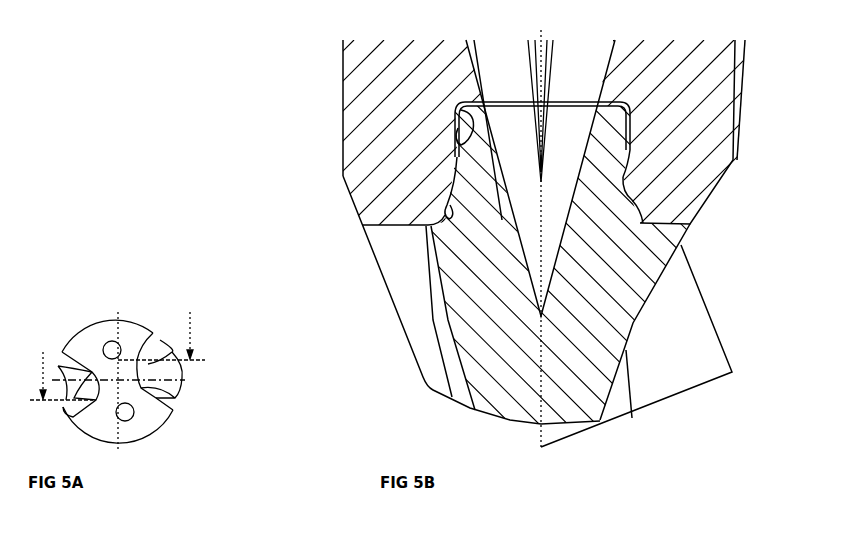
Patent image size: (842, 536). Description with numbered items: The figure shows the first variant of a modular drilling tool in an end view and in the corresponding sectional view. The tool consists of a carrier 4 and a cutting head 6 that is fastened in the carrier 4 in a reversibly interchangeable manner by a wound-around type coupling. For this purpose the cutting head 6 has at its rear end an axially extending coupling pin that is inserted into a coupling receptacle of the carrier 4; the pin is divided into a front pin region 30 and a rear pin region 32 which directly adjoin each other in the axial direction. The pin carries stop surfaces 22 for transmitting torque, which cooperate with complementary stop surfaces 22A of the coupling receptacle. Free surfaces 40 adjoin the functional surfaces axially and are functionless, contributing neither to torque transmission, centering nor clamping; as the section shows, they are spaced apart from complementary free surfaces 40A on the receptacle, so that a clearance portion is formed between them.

The carrier 4 is at (374, 78).
The cutting head 6 is at (462, 300).
The free surfaces 40 is at (487, 247).
The complementary free surfaces 40A is at (445, 183).
The stop surfaces 22 is at (327, 283).
The complementary stop surfaces 22A is at (447, 222).
The front pin region 30 is at (623, 187).
The rear pin region 32 is at (637, 141).